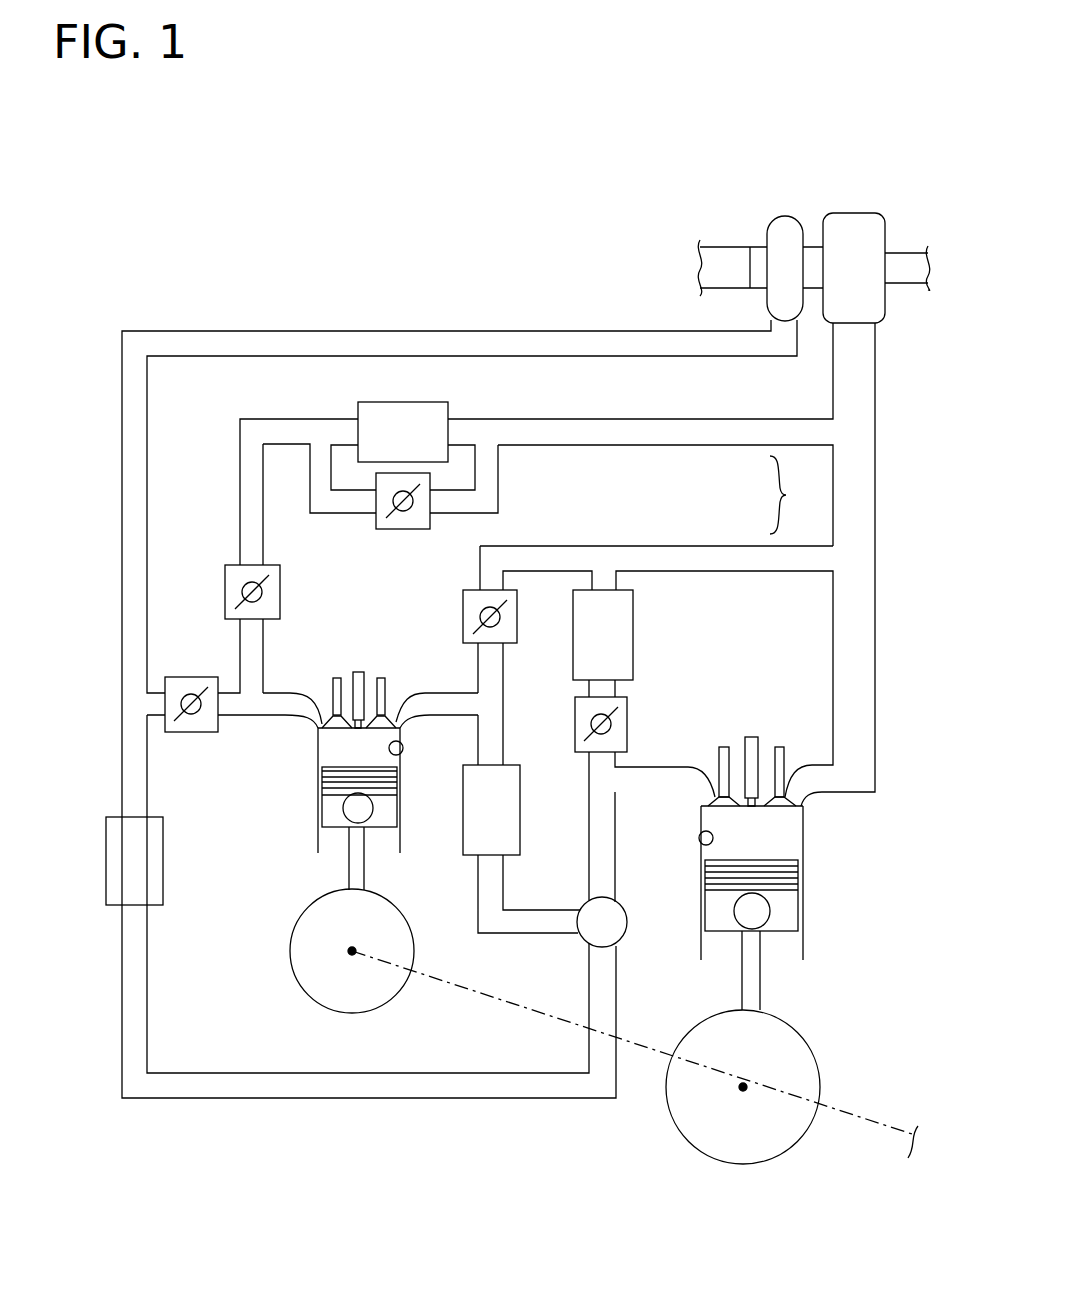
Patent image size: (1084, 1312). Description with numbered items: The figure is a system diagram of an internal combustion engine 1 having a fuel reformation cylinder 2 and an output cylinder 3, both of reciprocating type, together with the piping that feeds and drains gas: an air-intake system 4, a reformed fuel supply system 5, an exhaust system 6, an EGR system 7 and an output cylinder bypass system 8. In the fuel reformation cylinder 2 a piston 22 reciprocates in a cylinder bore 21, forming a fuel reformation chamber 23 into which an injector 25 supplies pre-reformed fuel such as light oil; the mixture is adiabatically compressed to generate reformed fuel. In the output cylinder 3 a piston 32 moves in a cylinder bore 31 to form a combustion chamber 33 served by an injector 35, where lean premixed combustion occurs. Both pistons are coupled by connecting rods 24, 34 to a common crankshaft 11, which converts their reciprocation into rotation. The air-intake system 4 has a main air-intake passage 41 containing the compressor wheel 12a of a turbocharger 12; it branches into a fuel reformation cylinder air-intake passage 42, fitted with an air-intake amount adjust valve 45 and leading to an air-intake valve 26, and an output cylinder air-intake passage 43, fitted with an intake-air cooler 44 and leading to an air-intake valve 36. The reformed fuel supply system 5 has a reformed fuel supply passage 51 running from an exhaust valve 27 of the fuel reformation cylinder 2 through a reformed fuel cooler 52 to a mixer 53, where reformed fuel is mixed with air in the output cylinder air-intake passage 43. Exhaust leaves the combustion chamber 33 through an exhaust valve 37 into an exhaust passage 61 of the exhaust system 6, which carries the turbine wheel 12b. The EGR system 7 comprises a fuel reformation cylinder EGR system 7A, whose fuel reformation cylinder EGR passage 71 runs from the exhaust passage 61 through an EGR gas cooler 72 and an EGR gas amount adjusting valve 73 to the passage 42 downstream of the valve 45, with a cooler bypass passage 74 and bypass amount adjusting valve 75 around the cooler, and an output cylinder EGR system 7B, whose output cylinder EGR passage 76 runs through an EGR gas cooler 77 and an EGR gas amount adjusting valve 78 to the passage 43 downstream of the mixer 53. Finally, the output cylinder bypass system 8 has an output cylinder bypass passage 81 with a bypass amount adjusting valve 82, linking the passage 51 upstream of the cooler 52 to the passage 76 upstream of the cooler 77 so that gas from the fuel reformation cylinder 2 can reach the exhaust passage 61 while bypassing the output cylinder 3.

The internal combustion engine 1 is at (170, 200).
The fuel reformation cylinder 2 is at (320, 812).
The output cylinder 3 is at (806, 900).
The air-intake system 4 is at (250, 330).
The reformed fuel supply system 5 is at (478, 870).
The exhaust system 6 is at (877, 640).
The EGR system 7 is at (791, 495).
The fuel reformation cylinder EGR system 7A is at (668, 448).
The output cylinder EGR system 7B is at (668, 544).
The output cylinder bypass system 8 is at (548, 545).
The crankshaft 11 is at (455, 988).
The turbocharger 12 is at (810, 198).
The compressor wheel 12a is at (790, 236).
The turbine wheel 12b is at (856, 230).
The cylinder bore 21 is at (400, 748).
The piston 22 is at (385, 812).
The fuel reformation chamber 23 is at (335, 745).
The connecting rod 24 is at (350, 870).
The injector 25 is at (362, 672).
The air-intake valve 26 is at (334, 680).
The exhaust valve 27 is at (388, 678).
The cylinder bore 31 is at (698, 836).
The piston 32 is at (718, 912).
The combustion chamber 33 is at (795, 832).
The connecting rod 34 is at (760, 985).
The injector 35 is at (752, 737).
The air-intake valve 36 is at (723, 748).
The exhaust valve 37 is at (783, 748).
The main air-intake passage 41 is at (388, 333).
The fuel reformation cylinder air-intake passage 42 is at (278, 692).
The output cylinder air-intake passage 43 is at (670, 766).
The intake-air cooler 44 is at (160, 860).
The air-intake amount adjust valve 45 is at (194, 735).
The reformed fuel supply passage 51 is at (480, 900).
The reformed fuel cooler 52 is at (510, 812).
The mixer 53 is at (592, 930).
The exhaust passage 61 is at (862, 715).
The fuel reformation cylinder EGR passage 71 is at (630, 430).
The EGR gas cooler 72 is at (388, 408).
The EGR gas amount adjusting valve 73 is at (225, 592).
The cooler bypass passage 74 is at (452, 515).
The bypass amount adjusting valve 75 is at (402, 530).
The output cylinder EGR passage 76 is at (762, 572).
The EGR gas cooler 77 is at (622, 633).
The EGR gas amount adjusting valve 78 is at (630, 720).
The output cylinder bypass passage 81 is at (508, 670).
The bypass amount adjusting valve 82 is at (516, 612).